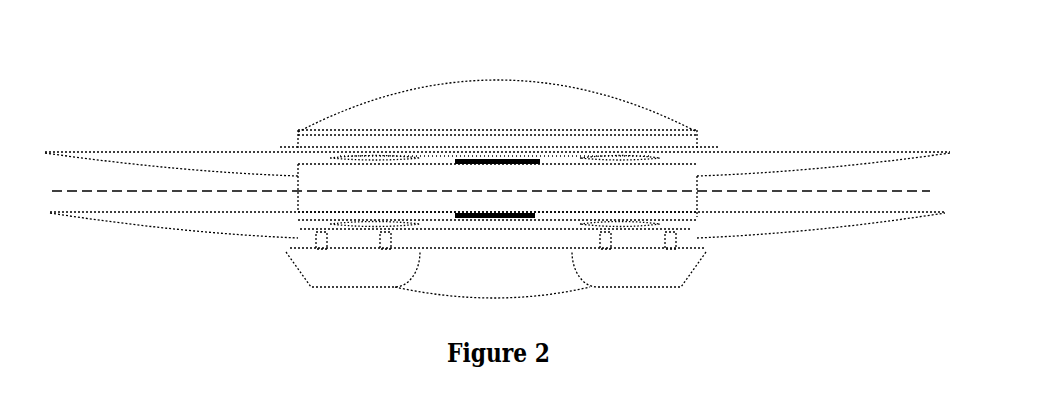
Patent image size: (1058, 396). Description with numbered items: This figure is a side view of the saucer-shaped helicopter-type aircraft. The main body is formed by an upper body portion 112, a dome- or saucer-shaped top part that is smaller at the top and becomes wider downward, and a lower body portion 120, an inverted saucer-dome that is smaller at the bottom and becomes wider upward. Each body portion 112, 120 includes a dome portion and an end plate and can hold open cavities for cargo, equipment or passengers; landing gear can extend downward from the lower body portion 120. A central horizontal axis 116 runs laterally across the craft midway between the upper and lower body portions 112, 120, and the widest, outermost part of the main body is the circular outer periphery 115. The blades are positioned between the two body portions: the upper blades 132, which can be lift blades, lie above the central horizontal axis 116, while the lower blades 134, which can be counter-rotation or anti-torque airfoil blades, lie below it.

The upper body portion 112 is at (609, 95).
The outer periphery 115 is at (697, 138).
The central horizontal axis 116 is at (803, 190).
The upper blades 132 is at (911, 149).
The lower blades 134 is at (878, 220).
The lower body portion 120 is at (545, 293).